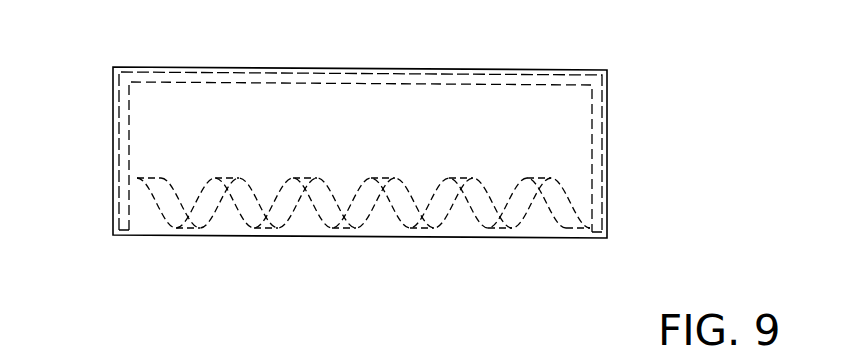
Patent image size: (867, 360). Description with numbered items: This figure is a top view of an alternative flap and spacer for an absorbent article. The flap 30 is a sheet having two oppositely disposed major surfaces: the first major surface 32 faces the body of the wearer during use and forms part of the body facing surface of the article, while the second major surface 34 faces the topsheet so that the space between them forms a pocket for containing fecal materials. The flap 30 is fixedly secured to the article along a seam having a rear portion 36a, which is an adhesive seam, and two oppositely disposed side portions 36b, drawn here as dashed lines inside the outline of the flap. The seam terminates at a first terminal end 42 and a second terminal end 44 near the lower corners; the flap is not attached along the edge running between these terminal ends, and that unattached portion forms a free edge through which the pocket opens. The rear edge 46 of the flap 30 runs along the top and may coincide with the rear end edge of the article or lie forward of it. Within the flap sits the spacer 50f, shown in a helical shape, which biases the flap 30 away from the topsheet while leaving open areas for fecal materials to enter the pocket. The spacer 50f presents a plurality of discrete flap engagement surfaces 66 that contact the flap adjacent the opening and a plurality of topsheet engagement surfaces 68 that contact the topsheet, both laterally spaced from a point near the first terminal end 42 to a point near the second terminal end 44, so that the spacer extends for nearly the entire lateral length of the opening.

The flap 30 is at (143, 140).
The first major surface 32 is at (393, 135).
The second major surface 34 is at (322, 118).
The rear portion of seam 36a is at (528, 80).
The side portions of seam 36b is at (130, 158).
The first terminal end 42 is at (125, 237).
The second terminal end 44 is at (597, 238).
The rear edge 46 is at (447, 69).
The spacer 50f is at (280, 225).
The flap engagement surfaces 66 is at (297, 205).
The topsheet engagement surfaces 68 is at (247, 205).